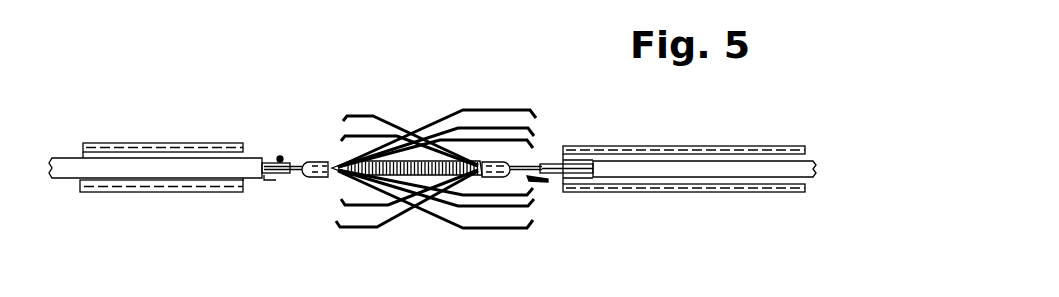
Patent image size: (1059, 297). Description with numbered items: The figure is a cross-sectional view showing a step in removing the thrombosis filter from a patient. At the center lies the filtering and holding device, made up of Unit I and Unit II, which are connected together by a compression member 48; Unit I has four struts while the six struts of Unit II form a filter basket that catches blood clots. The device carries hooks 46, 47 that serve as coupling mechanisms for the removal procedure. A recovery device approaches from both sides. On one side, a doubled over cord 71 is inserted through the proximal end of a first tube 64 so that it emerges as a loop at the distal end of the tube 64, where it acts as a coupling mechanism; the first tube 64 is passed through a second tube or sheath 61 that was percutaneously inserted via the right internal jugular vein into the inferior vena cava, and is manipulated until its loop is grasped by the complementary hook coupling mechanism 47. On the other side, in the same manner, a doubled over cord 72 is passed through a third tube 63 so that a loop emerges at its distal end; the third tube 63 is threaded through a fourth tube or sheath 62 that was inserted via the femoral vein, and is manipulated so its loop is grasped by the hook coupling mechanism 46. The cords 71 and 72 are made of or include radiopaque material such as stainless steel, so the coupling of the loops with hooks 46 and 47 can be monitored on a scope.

The hook coupling mechanism 46 is at (541, 184).
The hook coupling mechanism 47 is at (282, 157).
The compression member 48 is at (438, 160).
The second tube or sheath 61 is at (178, 143).
The fourth tube or sheath 62 is at (724, 147).
The third tube 63 is at (648, 165).
The first tube 64 is at (118, 163).
The doubled over cord 71 is at (270, 178).
The doubled over cord 72 is at (553, 163).
The Unit I is at (487, 183).
The Unit II is at (314, 182).